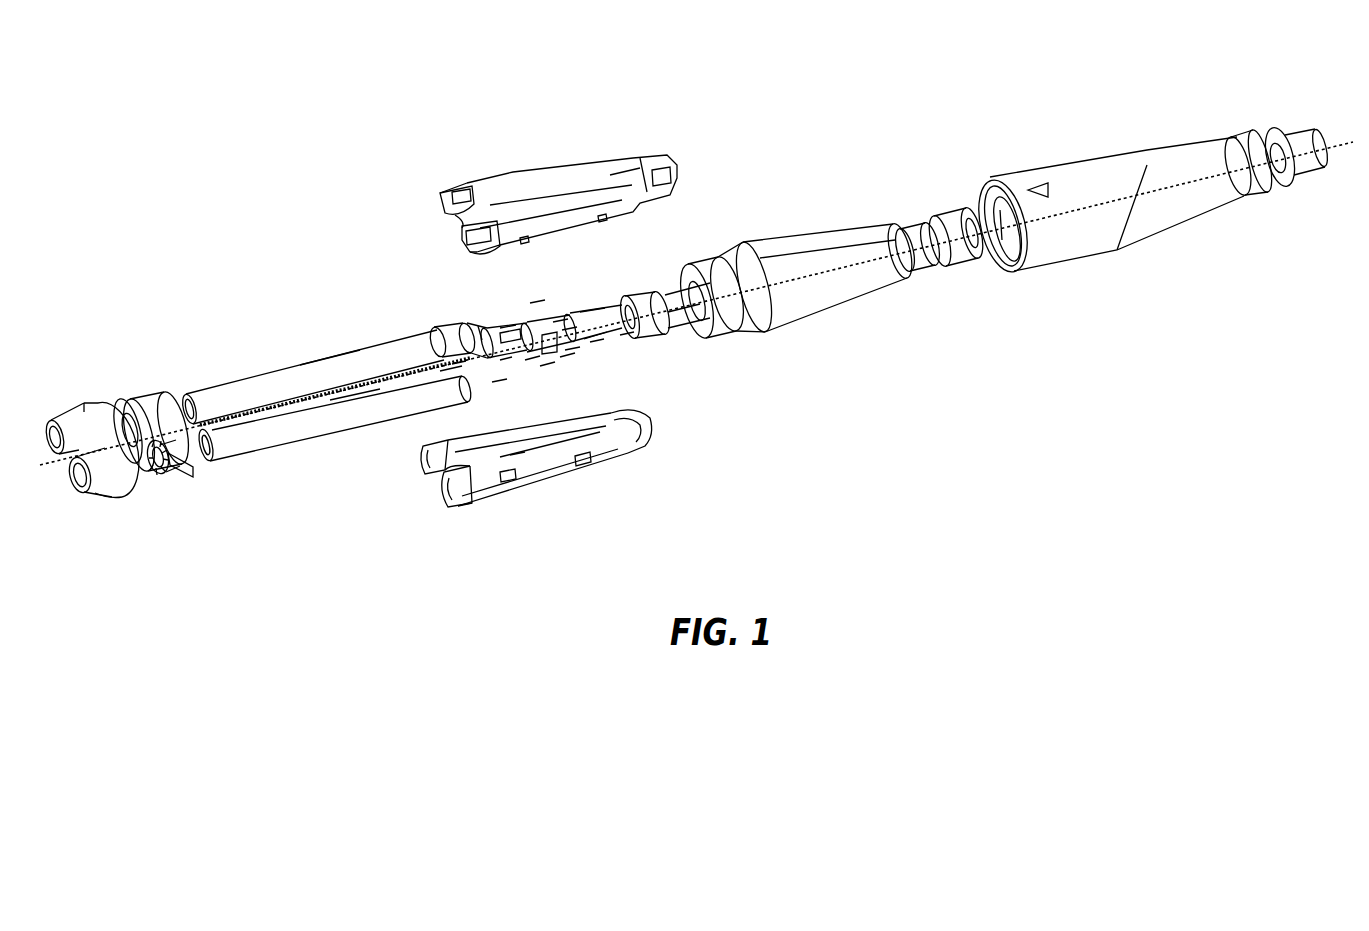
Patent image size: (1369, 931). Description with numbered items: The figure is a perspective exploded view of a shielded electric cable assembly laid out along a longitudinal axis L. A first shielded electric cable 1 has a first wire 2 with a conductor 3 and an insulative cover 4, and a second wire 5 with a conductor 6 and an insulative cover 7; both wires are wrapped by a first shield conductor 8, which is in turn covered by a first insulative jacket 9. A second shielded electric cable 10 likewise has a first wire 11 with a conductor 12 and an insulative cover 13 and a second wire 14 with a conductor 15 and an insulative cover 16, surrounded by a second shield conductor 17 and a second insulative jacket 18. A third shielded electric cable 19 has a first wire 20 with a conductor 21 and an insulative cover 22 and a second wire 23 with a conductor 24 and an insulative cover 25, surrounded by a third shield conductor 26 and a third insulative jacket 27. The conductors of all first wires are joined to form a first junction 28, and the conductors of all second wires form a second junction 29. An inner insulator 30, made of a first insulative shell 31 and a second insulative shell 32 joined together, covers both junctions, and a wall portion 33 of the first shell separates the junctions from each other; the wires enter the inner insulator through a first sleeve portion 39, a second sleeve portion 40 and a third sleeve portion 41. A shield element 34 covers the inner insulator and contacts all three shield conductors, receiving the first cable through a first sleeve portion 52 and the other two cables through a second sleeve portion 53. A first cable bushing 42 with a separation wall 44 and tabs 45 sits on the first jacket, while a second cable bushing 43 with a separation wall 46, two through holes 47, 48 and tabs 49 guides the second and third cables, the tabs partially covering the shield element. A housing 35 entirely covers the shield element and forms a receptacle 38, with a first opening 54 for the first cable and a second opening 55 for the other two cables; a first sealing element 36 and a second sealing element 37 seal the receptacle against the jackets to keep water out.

The first shielded electric cable 1 is at (697, 340).
The first wire 2 is at (592, 298).
The conductor 3 is at (569, 318).
The insulative cover 4 is at (607, 315).
The second wire 5 is at (597, 362).
The conductor 6 is at (572, 335).
The insulative cover 7 is at (628, 333).
The first shield conductor 8 is at (648, 295).
The first insulative jacket 9 is at (685, 290).
The second shielded electric cable 10 is at (302, 355).
The first wire 11 is at (510, 344).
The conductor 12 is at (530, 345).
The insulative cover 13 is at (490, 313).
The second wire 14 is at (505, 326).
The conductor 15 is at (560, 320).
The insulative cover 16 is at (473, 337).
The second shield conductor 17 is at (447, 340).
The second insulative jacket 18 is at (348, 362).
The third shielded electric cable 19 is at (303, 445).
The first wire 20 is at (505, 366).
The conductor 21 is at (531, 358).
The insulative cover 22 is at (464, 360).
The second wire 23 is at (500, 385).
The conductor 24 is at (565, 355).
The insulative cover 25 is at (545, 365).
The third shield conductor 26 is at (468, 369).
The third insulative jacket 27 is at (356, 413).
The first junction 28 is at (537, 293).
The second junction 29 is at (569, 324).
The inner insulator 30 is at (640, 150).
The first insulative shell 31 is at (630, 450).
The second insulative shell 32 is at (633, 178).
The wall portion 33 is at (518, 460).
The shield element 34 is at (813, 240).
The housing 35 is at (1073, 168).
The first sealing element 36 is at (1293, 140).
The second sealing element 37 is at (90, 407).
The receptacle 38 is at (1006, 263).
The first sleeve portion 39 is at (663, 182).
The second sleeve portion 40 is at (455, 197).
The third sleeve portion 41 is at (467, 235).
The first cable bushing 42 is at (950, 215).
The second cable bushing 43 is at (152, 390).
The separation wall 44 is at (973, 210).
The tabs 45 is at (947, 263).
The separation wall 46 is at (154, 473).
The through hole 47 is at (133, 427).
The through hole 48 is at (158, 456).
The tabs 49 is at (180, 445).
The first sleeve portion 52 is at (910, 232).
The second sleeve portion 53 is at (743, 327).
The first opening 54 is at (1257, 140).
The second opening 55 is at (1012, 222).
The longitudinal axis L is at (1350, 142).